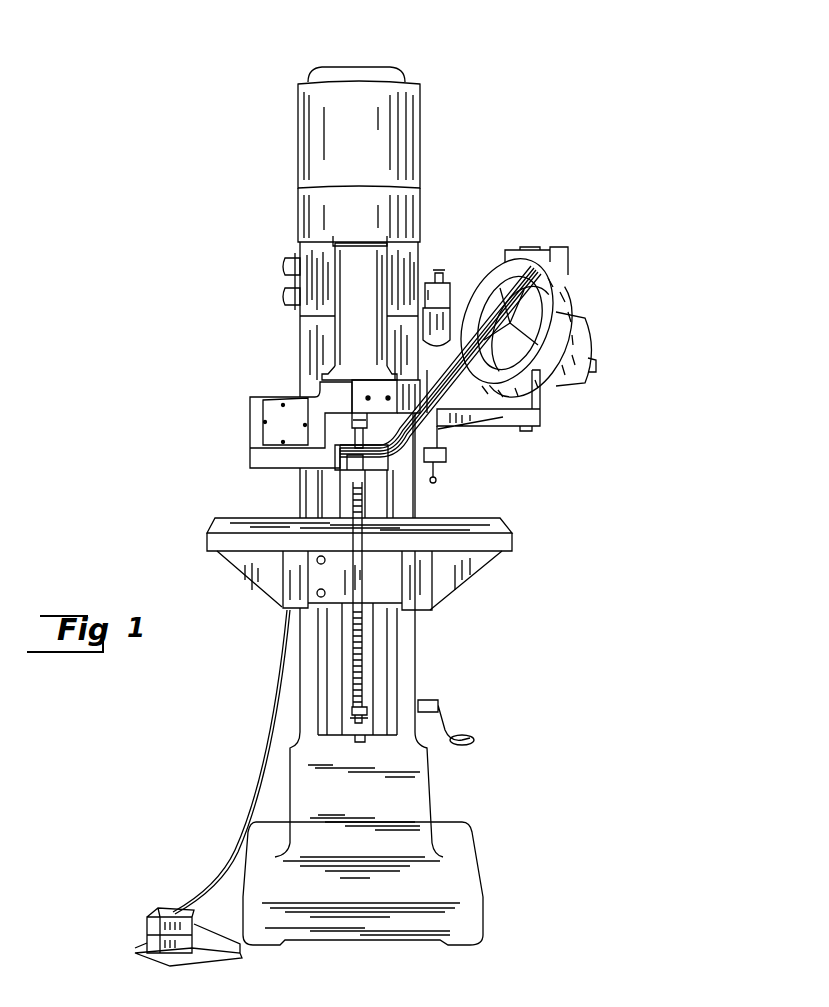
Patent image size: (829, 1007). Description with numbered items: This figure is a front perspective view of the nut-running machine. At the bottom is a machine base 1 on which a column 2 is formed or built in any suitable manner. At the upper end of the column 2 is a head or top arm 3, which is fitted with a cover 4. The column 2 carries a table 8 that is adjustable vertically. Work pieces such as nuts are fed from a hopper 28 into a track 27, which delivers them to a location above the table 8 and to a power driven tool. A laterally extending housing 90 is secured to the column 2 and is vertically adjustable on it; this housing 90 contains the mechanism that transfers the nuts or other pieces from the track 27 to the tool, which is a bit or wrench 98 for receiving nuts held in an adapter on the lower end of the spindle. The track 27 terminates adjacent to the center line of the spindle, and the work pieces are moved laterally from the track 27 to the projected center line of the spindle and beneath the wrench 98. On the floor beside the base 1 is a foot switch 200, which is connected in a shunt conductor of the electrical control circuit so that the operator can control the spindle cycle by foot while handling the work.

The machine base 1 is at (458, 858).
The column 2 is at (413, 657).
The head or top arm 3 is at (420, 211).
The cover 4 is at (418, 128).
The table 8 is at (466, 570).
The track 27 is at (438, 428).
The hopper 28 is at (555, 320).
The laterally extending housing 90 is at (253, 412).
The bit or wrench 98 is at (330, 445).
The foot switch 200 is at (146, 918).